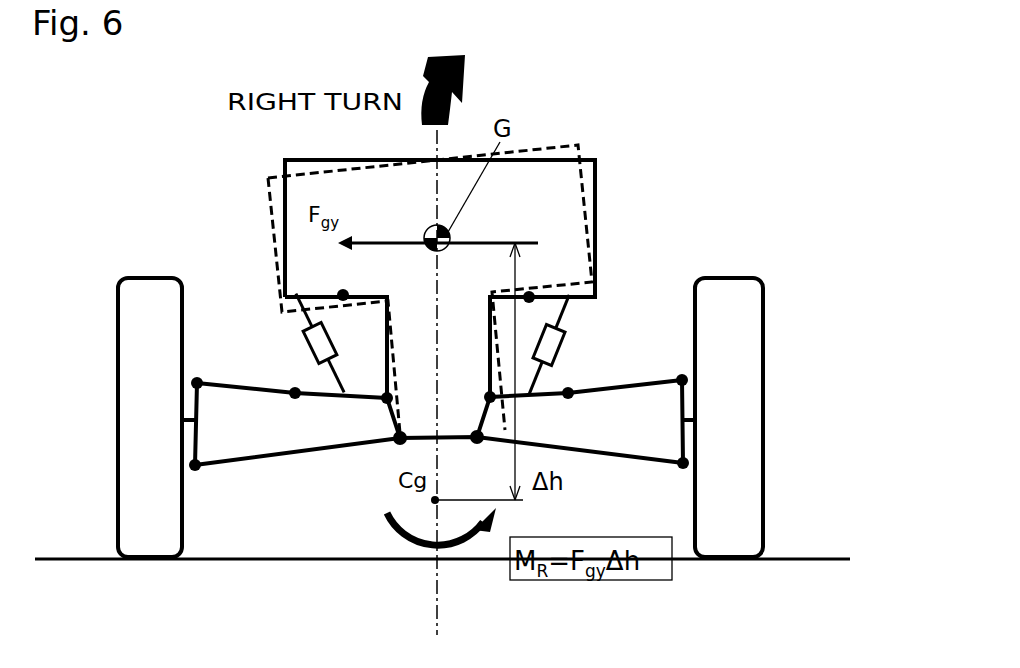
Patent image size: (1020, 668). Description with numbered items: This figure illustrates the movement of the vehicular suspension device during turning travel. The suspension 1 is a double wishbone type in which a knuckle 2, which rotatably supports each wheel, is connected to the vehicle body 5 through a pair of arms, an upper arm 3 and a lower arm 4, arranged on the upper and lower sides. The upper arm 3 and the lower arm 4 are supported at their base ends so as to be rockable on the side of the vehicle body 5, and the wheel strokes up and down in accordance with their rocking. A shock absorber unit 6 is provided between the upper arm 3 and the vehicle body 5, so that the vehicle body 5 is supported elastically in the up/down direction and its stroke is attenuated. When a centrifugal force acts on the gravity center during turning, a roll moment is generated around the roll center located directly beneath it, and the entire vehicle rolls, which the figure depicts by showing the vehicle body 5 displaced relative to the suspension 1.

The suspension 1 is at (730, 403).
The knuckle 2 is at (190, 443).
The upper arm 3 is at (605, 388).
The lower arm 4 is at (652, 467).
The vehicle body 5 is at (272, 191).
The shock absorber unit 6 is at (305, 343).